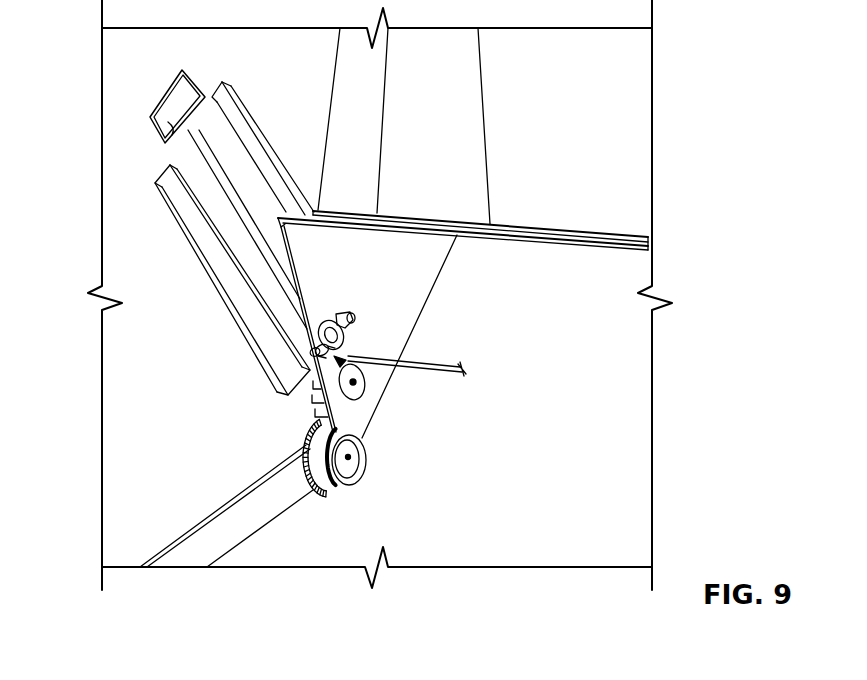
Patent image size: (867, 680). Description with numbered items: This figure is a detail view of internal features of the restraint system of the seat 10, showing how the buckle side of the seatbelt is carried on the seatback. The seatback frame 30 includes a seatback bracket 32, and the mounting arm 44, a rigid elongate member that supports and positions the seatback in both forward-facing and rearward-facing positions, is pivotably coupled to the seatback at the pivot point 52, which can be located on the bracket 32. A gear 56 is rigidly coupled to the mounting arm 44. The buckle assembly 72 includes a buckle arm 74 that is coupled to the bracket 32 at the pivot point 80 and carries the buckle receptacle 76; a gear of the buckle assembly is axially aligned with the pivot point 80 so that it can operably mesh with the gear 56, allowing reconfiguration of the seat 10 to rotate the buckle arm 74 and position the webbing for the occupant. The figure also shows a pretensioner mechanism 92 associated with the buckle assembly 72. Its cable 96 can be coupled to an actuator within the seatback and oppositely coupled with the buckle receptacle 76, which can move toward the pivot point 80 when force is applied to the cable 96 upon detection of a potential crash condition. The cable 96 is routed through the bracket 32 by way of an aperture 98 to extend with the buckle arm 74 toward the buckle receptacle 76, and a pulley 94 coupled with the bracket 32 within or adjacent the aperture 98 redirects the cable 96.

The seat 10 is at (302, 68).
The seatback frame 30 is at (470, 102).
The seatback bracket 32 is at (378, 272).
The mounting arm 44 is at (210, 533).
The pivot point 52 is at (350, 457).
The gear 56 is at (327, 493).
The buckle assembly 72 is at (143, 213).
The buckle arm 74 is at (233, 277).
The buckle receptacle 76 is at (155, 135).
The pivot point 80 is at (357, 399).
The pretensioner mechanism 92 is at (428, 314).
The pulley 94 is at (350, 343).
The cable 96 is at (463, 362).
The aperture 98 is at (356, 383).